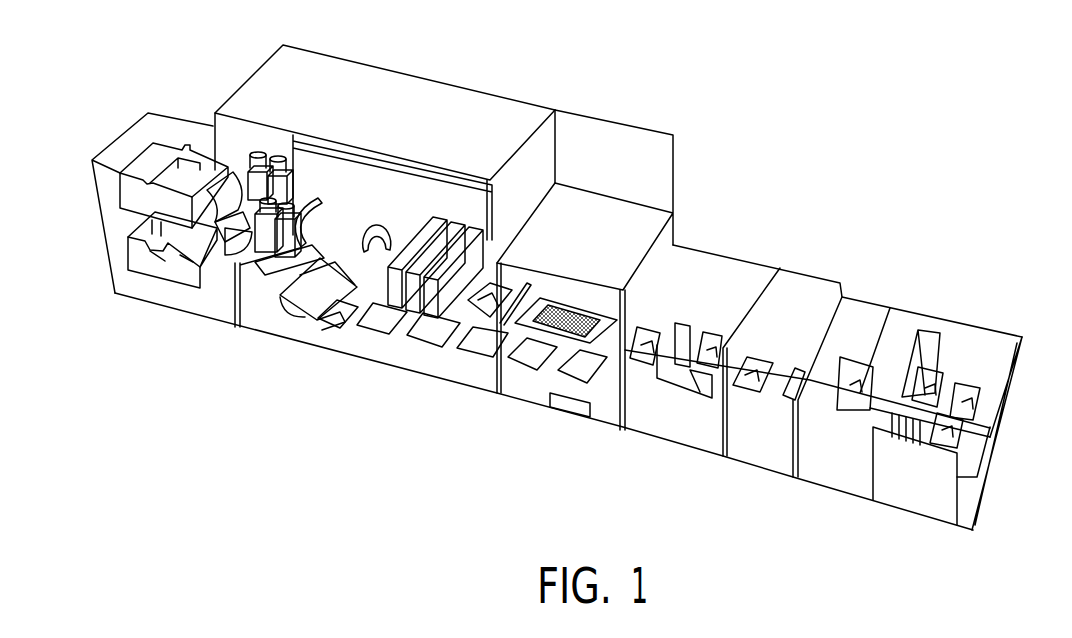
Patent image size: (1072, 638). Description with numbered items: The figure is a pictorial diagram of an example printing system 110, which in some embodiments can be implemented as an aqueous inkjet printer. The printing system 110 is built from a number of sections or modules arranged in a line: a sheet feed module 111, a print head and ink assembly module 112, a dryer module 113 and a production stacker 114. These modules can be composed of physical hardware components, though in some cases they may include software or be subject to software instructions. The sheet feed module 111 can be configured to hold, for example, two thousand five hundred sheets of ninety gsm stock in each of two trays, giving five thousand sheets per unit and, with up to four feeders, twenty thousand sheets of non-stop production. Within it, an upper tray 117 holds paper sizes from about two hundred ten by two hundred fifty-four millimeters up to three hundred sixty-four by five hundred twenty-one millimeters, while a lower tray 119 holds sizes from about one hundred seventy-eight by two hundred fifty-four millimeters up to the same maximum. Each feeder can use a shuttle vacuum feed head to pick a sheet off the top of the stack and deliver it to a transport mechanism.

The printing system 110 is at (768, 214).
The sheet feed module 111 is at (248, 215).
The print head and ink assembly module 112 is at (448, 225).
The dryer module 113 is at (572, 283).
The production stacker 114 is at (978, 356).
The upper tray 117 is at (148, 163).
The lower tray 119 is at (167, 270).